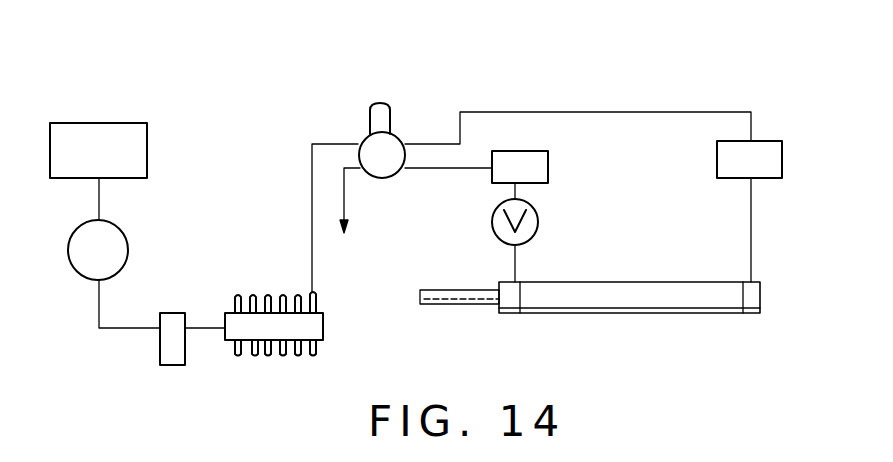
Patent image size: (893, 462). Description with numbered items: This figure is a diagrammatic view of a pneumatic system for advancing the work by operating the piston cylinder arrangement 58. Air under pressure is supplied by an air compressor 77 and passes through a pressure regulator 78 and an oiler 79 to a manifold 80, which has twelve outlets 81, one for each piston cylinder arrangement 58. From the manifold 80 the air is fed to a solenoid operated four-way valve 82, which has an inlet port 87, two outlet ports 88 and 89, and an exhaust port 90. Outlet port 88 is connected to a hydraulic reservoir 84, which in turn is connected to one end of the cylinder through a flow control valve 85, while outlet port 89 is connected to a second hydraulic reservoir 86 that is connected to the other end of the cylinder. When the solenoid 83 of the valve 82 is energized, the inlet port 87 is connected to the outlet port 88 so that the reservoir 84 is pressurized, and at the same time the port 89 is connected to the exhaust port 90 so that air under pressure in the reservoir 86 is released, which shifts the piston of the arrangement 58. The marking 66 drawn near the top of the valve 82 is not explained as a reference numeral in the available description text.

The air compressor 77 is at (88, 128).
The pressure regulator 78 is at (72, 258).
The oiler 79 is at (172, 318).
The manifold 80 is at (255, 357).
The outlets 81 is at (298, 352).
The solenoid operated four-way valve 82 is at (387, 88).
The solenoid 83 is at (368, 108).
The spray 66 is at (394, 108).
The inlet port 87 is at (340, 143).
The outlet port 88 is at (408, 143).
The outlet port 89 is at (410, 172).
The exhaust port 90 is at (354, 168).
The hydraulic reservoir 84 is at (543, 160).
The flow control valve 85 is at (540, 221).
The hydraulic reservoir 86 is at (765, 152).
The piston cylinder arrangement 58 is at (620, 316).